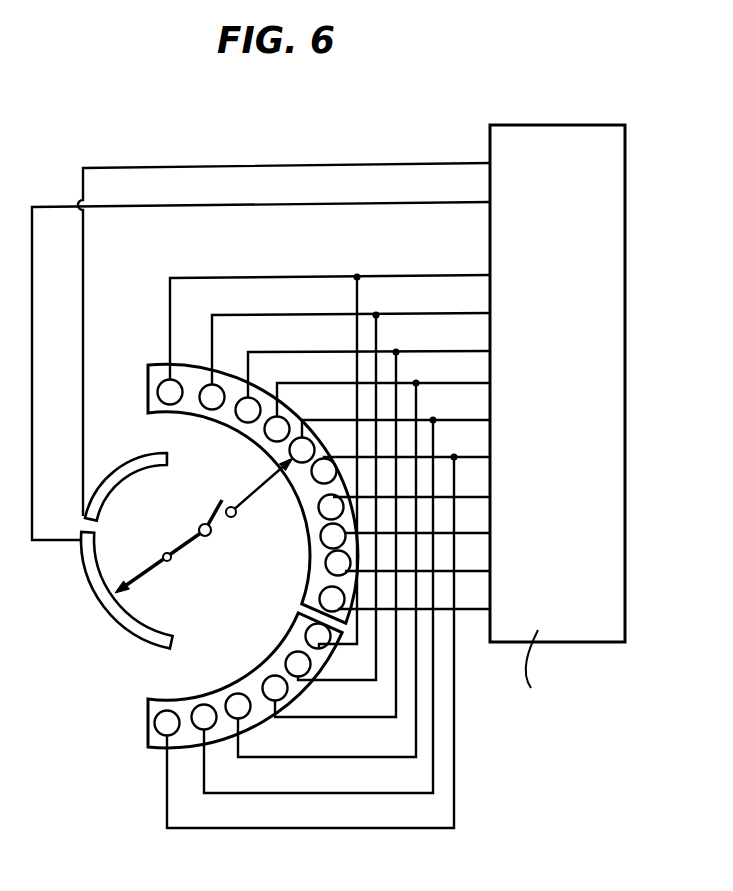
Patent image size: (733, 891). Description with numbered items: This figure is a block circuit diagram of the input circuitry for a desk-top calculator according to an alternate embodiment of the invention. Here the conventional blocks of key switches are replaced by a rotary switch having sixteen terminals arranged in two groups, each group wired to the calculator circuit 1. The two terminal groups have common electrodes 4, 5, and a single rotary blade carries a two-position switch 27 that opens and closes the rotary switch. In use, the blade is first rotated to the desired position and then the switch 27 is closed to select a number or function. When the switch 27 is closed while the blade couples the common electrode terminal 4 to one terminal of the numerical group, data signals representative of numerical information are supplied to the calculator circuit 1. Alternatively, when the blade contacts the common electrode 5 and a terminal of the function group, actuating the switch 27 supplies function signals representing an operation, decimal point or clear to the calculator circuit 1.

The calculator circuit 1 is at (602, 183).
The common electrode 4 is at (272, 366).
The common electrode 5 is at (295, 336).
The two-position switch 27 is at (217, 520).